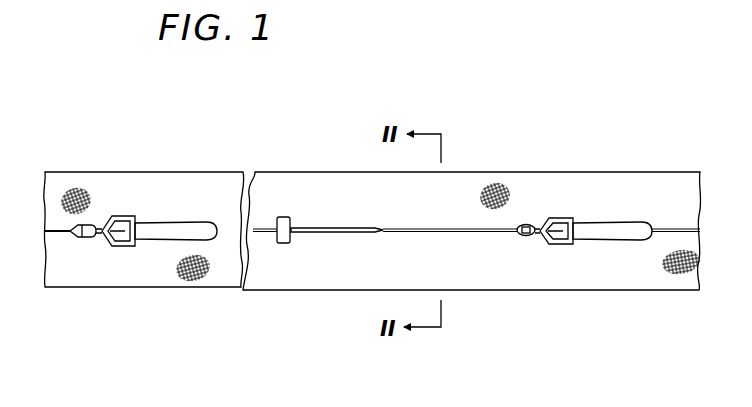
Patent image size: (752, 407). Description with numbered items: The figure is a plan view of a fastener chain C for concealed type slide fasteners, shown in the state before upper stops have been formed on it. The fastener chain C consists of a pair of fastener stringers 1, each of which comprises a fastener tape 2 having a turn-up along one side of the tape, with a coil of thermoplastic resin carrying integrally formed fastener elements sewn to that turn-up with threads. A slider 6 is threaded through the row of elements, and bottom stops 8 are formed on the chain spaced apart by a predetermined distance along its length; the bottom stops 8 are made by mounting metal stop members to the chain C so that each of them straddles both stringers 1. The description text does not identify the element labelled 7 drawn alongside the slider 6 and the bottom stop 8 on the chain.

The fastener stringer 1 is at (472, 231).
The fastener tape 2 is at (320, 270).
The slider 6 is at (83, 238).
The rod / pin 7 is at (357, 231).
The bottom stop 8 is at (284, 243).
The fastener chain C is at (186, 165).